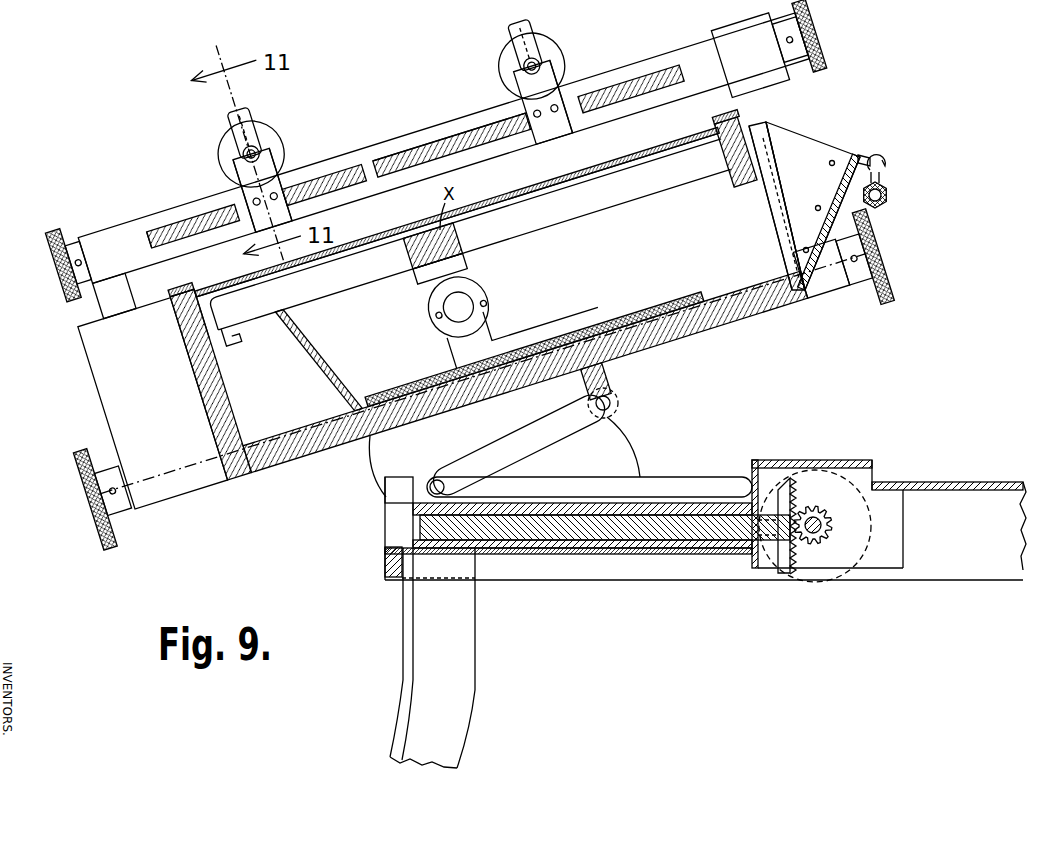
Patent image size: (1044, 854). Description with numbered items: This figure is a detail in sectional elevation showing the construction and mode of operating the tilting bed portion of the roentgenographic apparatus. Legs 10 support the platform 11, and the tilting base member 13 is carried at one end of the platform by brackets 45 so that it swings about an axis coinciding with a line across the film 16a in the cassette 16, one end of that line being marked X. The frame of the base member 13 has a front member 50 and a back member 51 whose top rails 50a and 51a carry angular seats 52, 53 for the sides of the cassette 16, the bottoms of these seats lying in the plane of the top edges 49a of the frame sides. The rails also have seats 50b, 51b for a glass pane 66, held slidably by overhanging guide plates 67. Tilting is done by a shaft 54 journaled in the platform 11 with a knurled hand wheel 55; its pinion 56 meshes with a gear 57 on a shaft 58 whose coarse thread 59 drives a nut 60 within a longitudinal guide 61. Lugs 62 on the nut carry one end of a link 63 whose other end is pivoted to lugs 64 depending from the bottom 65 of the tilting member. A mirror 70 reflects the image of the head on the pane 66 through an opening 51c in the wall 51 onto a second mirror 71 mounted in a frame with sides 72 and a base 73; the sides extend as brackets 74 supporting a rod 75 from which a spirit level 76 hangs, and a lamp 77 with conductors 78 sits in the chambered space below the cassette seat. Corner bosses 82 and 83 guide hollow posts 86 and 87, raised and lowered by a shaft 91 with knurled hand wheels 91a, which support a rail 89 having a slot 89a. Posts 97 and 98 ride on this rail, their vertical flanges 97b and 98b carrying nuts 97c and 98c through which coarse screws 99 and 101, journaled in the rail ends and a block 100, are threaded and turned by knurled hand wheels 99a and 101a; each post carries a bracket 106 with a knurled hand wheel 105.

The legs 10 is at (455, 690).
The platform 11 is at (949, 526).
The tilting base member 13 is at (287, 467).
The cassette 16 is at (457, 215).
The film 16a is at (460, 230).
The brackets 45 is at (504, 454).
The top edges of the sides of the frame 49a is at (420, 270).
The front member of the frame 50 is at (195, 405).
The top rail of the front member 50a is at (197, 320).
The seat for the pane 50b is at (172, 300).
The back member of the frame 51 is at (763, 218).
The top rail of the rear member 51a is at (770, 118).
The seat for the pane 51b is at (745, 120).
The opening 51c is at (780, 235).
The angular seat 52 is at (225, 330).
The angular seat 53 is at (723, 185).
The shaft 54 is at (815, 522).
The knurled hand wheel 55 is at (813, 583).
The pinion 56 is at (822, 535).
The gear 57 is at (782, 555).
The shaft 58 is at (675, 547).
The coarse thread 59 is at (725, 500).
The nut 60 is at (588, 548).
The guide 61 is at (500, 548).
The lugs 62 is at (470, 487).
The link 63 is at (527, 440).
The lugs 64 is at (612, 395).
The bottom 65 is at (672, 345).
The pane 66 is at (600, 165).
The guide plates 67 is at (190, 282).
The mirror 70 is at (340, 375).
The second mirror 71 is at (838, 190).
The sides 72 is at (813, 206).
The base 73 is at (862, 155).
The brackets 74 is at (880, 160).
The rod 75 is at (882, 170).
The spirit level 76 is at (893, 195).
The lamp 77 is at (465, 300).
The conductors 78 is at (570, 325).
The boss 82 is at (113, 400).
The boss 83 is at (828, 285).
The hollow post 86 is at (108, 292).
The hollow post 87 is at (735, 60).
The rail 89 is at (176, 195).
The slot 89a is at (157, 222).
The shaft 91 is at (170, 485).
The knurled hand wheels 91a is at (88, 485).
The post 97 is at (243, 225).
The vertical flange 97b is at (296, 175).
The nut 97c is at (233, 195).
The post 98 is at (530, 107).
The vertical flange 98b is at (555, 100).
The nut 98c is at (585, 95).
The screw 99 is at (360, 145).
The knurled hand wheel 99a is at (50, 240).
The block 100 is at (372, 168).
The screw 101 is at (440, 148).
The knurled hand wheel 101a is at (822, 45).
The knurled hand wheel 105 is at (228, 148).
The bracket 106 is at (220, 137).